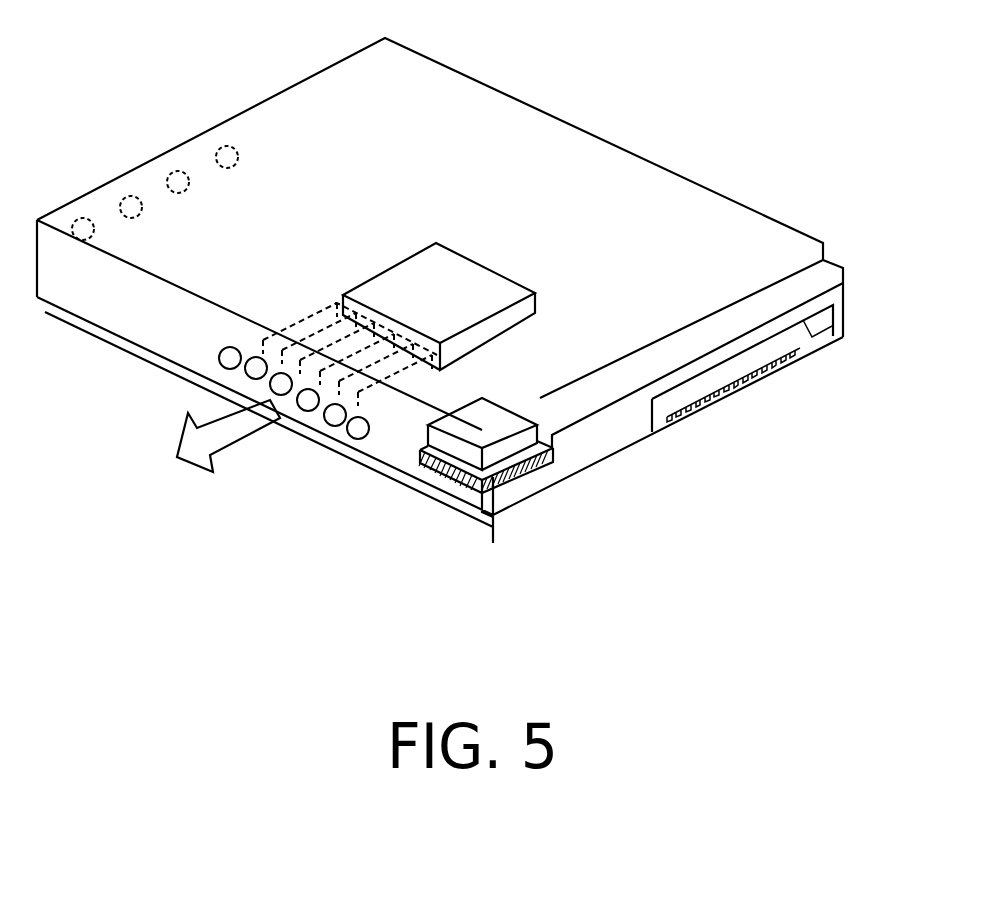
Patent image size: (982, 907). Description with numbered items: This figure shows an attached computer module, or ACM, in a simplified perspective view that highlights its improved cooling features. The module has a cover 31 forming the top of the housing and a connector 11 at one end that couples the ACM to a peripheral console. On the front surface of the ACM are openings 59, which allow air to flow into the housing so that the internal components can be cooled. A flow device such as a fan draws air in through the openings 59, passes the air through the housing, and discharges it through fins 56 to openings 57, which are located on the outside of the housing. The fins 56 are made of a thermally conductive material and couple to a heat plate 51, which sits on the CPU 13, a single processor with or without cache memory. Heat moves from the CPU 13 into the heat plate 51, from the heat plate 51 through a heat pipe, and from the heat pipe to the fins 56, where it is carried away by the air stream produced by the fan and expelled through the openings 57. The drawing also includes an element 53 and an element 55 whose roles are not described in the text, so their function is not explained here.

The connector 11 is at (796, 343).
The CPU 13 is at (547, 470).
The cover 31 is at (683, 207).
The heat plate 51 is at (483, 495).
The arrow / slide direction 53 is at (418, 400).
The block on top 55 is at (483, 288).
The fins 56 is at (427, 377).
The openings 57 is at (335, 418).
The openings 59 is at (82, 232).